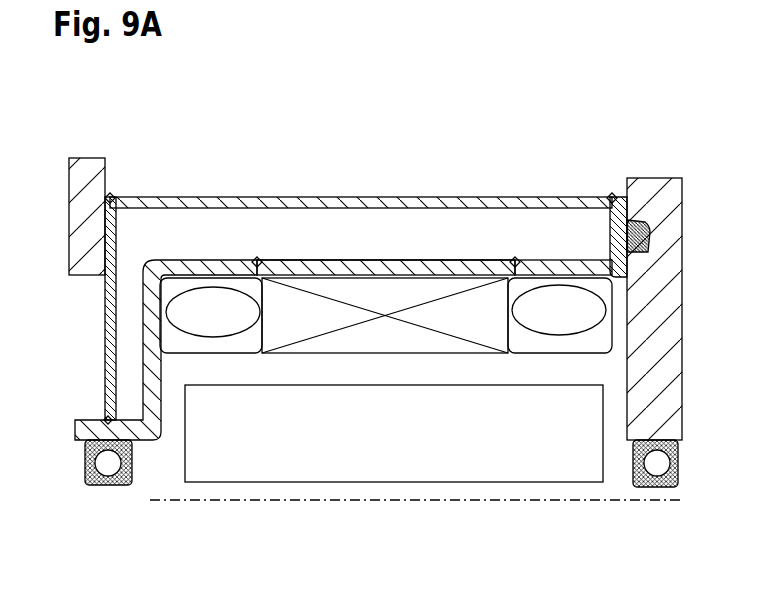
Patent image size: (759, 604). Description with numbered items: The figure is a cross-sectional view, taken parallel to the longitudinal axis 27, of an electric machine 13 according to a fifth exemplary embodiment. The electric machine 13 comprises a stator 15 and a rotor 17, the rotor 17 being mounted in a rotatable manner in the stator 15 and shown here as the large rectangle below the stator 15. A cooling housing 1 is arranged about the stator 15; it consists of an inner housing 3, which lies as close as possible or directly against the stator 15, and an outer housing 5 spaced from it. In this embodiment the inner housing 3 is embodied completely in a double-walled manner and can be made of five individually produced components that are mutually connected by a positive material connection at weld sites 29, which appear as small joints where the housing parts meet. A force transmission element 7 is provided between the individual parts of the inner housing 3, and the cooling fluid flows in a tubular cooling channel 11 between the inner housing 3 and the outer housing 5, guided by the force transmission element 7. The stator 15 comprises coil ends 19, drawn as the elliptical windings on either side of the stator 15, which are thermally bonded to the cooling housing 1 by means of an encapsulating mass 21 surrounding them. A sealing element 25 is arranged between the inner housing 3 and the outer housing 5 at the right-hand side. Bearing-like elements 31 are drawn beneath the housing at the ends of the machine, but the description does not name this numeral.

The cooling housing 1 is at (417, 186).
The inner housing 3 is at (378, 260).
The outer housing 5 is at (224, 197).
The force transmission element 7 is at (330, 240).
The cooling channel 11 is at (557, 245).
The electric machine 13 is at (83, 141).
The stator 15 is at (575, 356).
The rotor 17 is at (530, 412).
The coil ends 19 is at (585, 305).
The encapsulating mass 21 is at (597, 340).
The sealing element 25 is at (650, 236).
The longitudinal axis 27 is at (193, 502).
The weld site 29 is at (110, 200).
The bearing 31 is at (96, 488).